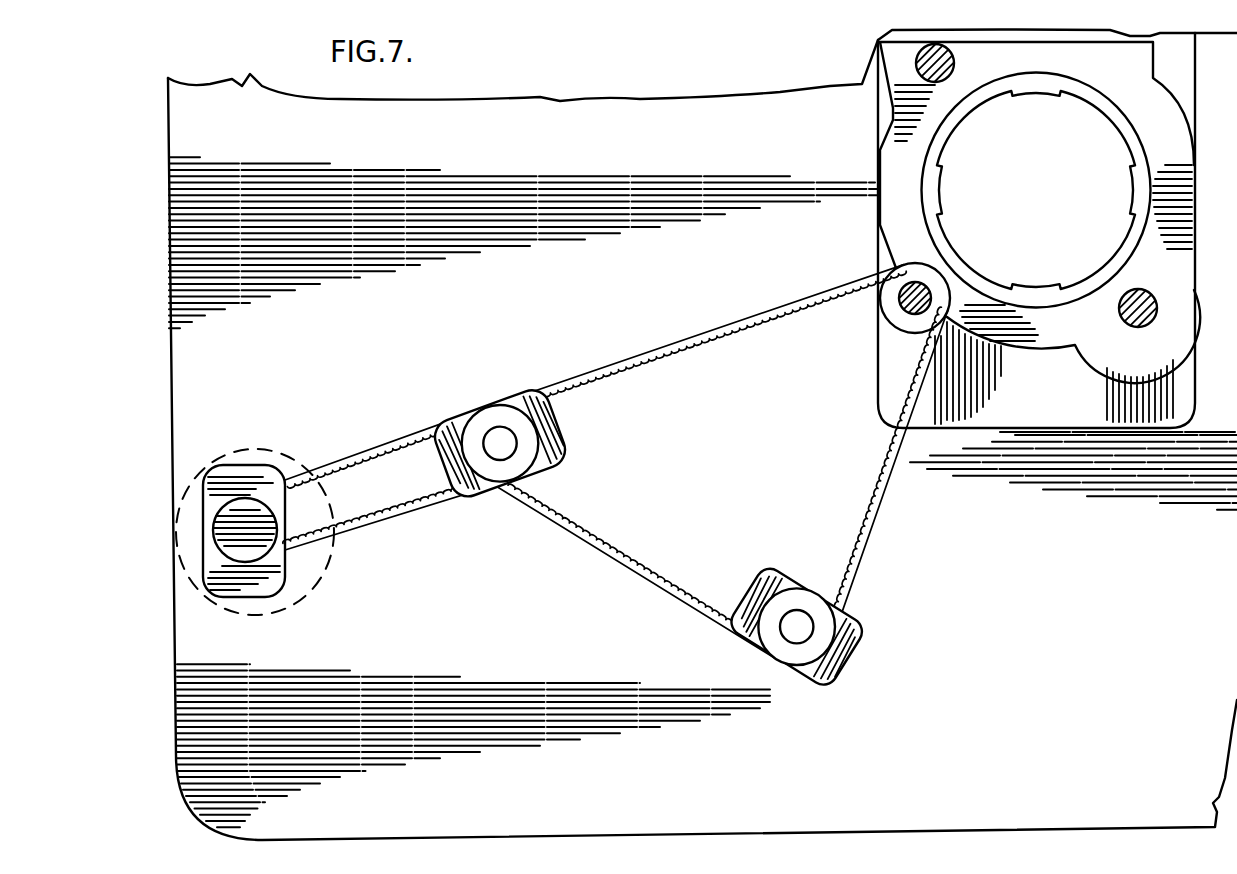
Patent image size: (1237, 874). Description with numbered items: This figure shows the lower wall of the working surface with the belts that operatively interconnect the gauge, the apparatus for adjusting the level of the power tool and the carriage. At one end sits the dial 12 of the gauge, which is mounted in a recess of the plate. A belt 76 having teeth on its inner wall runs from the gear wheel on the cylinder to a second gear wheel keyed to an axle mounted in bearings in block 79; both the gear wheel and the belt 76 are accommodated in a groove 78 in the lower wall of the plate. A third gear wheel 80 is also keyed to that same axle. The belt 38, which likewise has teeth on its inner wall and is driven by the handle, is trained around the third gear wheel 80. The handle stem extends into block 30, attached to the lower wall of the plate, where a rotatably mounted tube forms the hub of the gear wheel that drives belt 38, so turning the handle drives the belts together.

The circular dial 12 is at (170, 570).
The belt 76 is at (352, 475).
The groove 78 is at (400, 523).
The third gear wheel 80 is at (455, 425).
The block 79 is at (570, 457).
The belt 38 is at (580, 528).
The block 30 is at (860, 655).